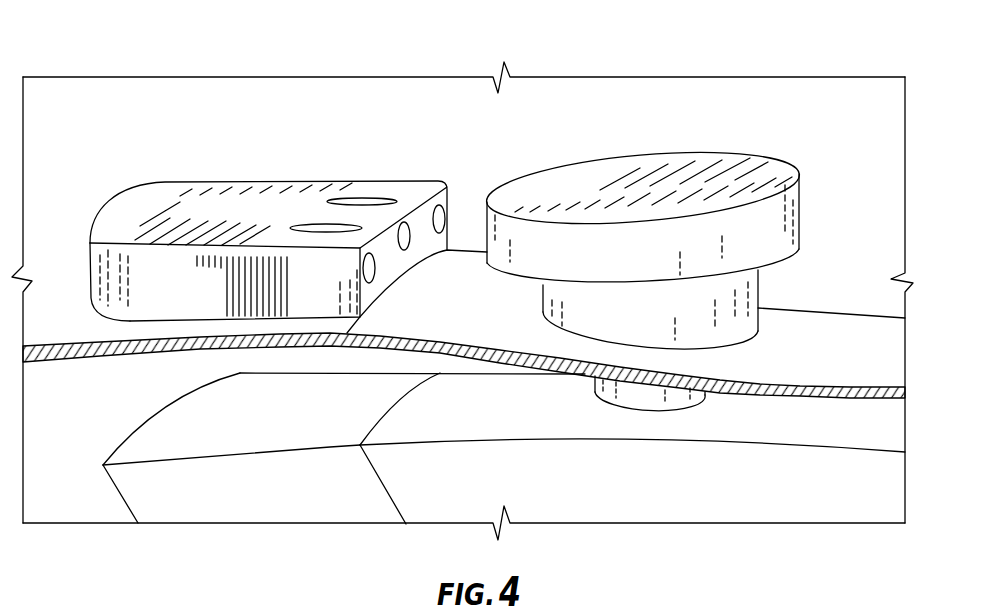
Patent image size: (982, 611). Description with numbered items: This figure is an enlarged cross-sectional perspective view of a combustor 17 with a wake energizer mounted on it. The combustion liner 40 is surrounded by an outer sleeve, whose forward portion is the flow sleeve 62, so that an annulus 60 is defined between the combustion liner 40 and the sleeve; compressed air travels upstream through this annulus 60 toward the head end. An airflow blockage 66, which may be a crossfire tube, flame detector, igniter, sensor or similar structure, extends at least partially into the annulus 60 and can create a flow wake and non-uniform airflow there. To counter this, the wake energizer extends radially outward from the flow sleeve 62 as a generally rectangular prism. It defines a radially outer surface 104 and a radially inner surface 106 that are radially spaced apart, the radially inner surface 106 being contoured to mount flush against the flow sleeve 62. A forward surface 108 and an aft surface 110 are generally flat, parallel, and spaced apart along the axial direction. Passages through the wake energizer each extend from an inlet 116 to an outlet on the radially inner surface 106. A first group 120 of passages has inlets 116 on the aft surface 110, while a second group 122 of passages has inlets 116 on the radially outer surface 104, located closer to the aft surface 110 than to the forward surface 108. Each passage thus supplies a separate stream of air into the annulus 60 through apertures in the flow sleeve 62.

The combustor 17 is at (107, 42).
The combustion liner 40 is at (702, 433).
The annulus 60 is at (338, 377).
The flow sleeve 62 is at (53, 355).
The airflow blockage 66 is at (792, 215).
The radially outer surface 104 is at (212, 207).
The radially inner surface 106 is at (245, 318).
The forward surface 108 is at (86, 263).
The aft surface 110 is at (393, 267).
The inlet 116 is at (350, 195).
The first group of passages 120 is at (402, 213).
The second group of passages 122 is at (318, 226).